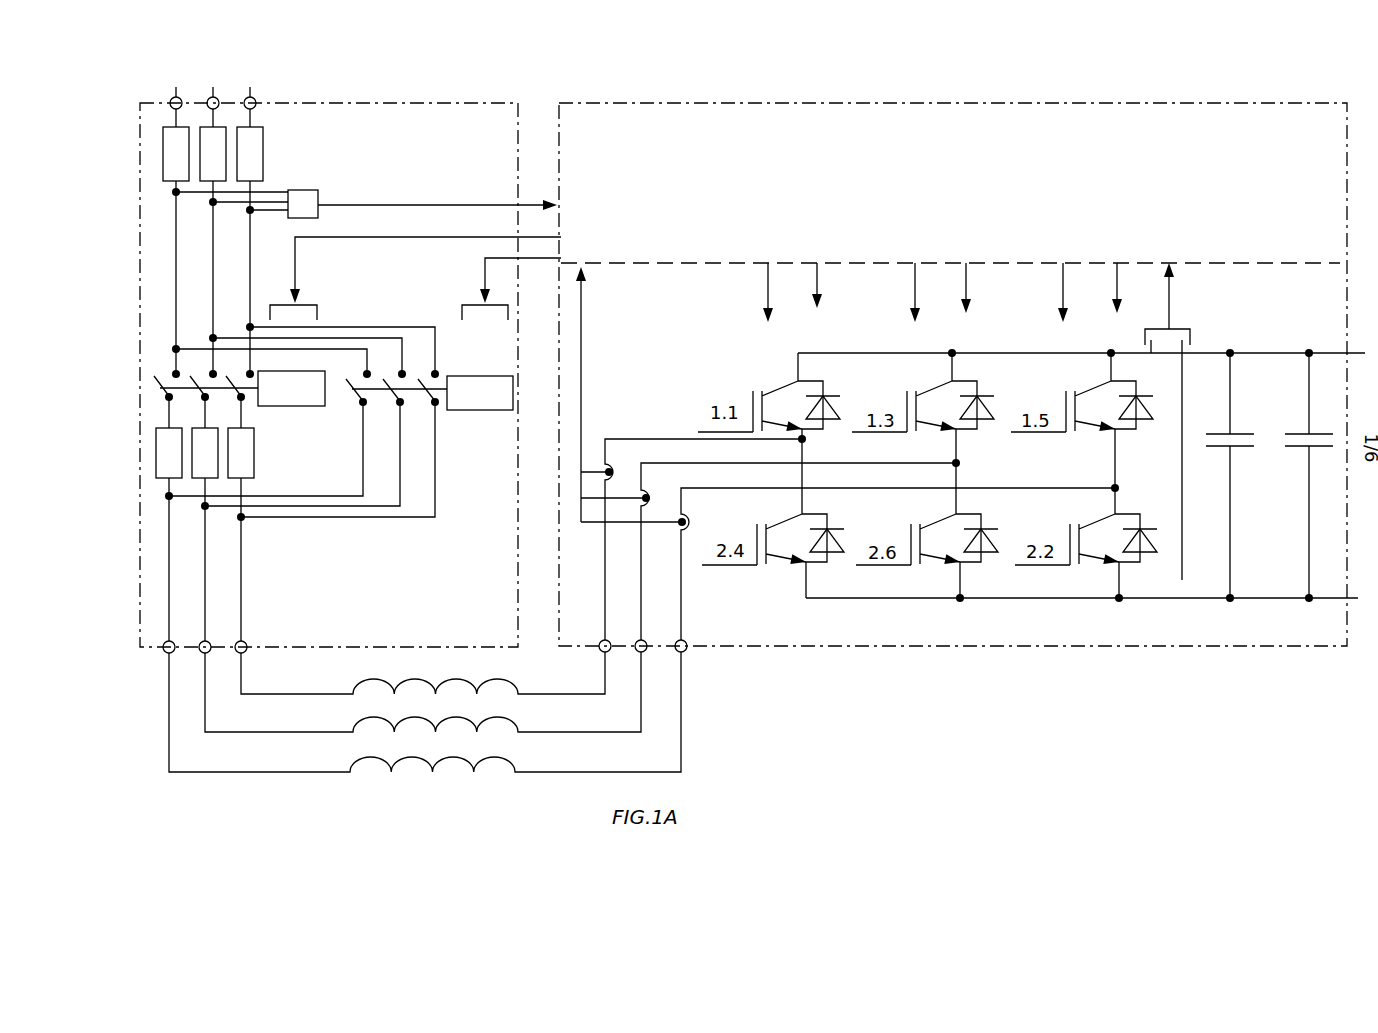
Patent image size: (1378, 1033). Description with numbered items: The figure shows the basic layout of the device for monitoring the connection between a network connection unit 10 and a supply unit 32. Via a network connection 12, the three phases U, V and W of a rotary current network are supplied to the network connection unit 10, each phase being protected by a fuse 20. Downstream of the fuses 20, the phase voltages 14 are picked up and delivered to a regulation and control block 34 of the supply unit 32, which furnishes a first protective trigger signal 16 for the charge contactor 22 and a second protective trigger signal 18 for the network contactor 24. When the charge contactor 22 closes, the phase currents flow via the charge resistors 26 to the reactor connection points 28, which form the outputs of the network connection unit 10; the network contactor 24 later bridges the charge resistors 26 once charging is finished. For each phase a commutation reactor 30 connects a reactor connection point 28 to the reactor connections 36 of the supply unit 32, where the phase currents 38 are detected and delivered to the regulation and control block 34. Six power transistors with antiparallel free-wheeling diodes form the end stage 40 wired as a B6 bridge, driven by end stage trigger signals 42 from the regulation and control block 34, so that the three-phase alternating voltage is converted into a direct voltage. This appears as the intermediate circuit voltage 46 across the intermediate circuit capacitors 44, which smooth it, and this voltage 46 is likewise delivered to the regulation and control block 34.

The network connection unit 10 is at (138, 605).
The network connection 12 is at (161, 82).
The phase voltages 14 is at (510, 205).
The first protective trigger signal 16 is at (537, 237).
The second protective trigger signal 18 is at (543, 258).
The fuse 20 is at (121, 145).
The charge contactor 22 is at (298, 406).
The network contactor 24 is at (473, 410).
The charge resistors 26 is at (121, 439).
The reactor connection points 28 is at (147, 665).
The commutation reactors 30 is at (415, 760).
The supply unit 32 is at (1092, 103).
The regulation and control block 34 is at (1285, 130).
The reactor connections 36 is at (710, 686).
The phase currents 38 is at (582, 393).
The end stage 40 is at (1165, 631).
The end stage trigger signals 42 is at (1184, 251).
The intermediate circuit capacitors 44 is at (1297, 432).
The intermediate circuit voltage 46 is at (1180, 325).